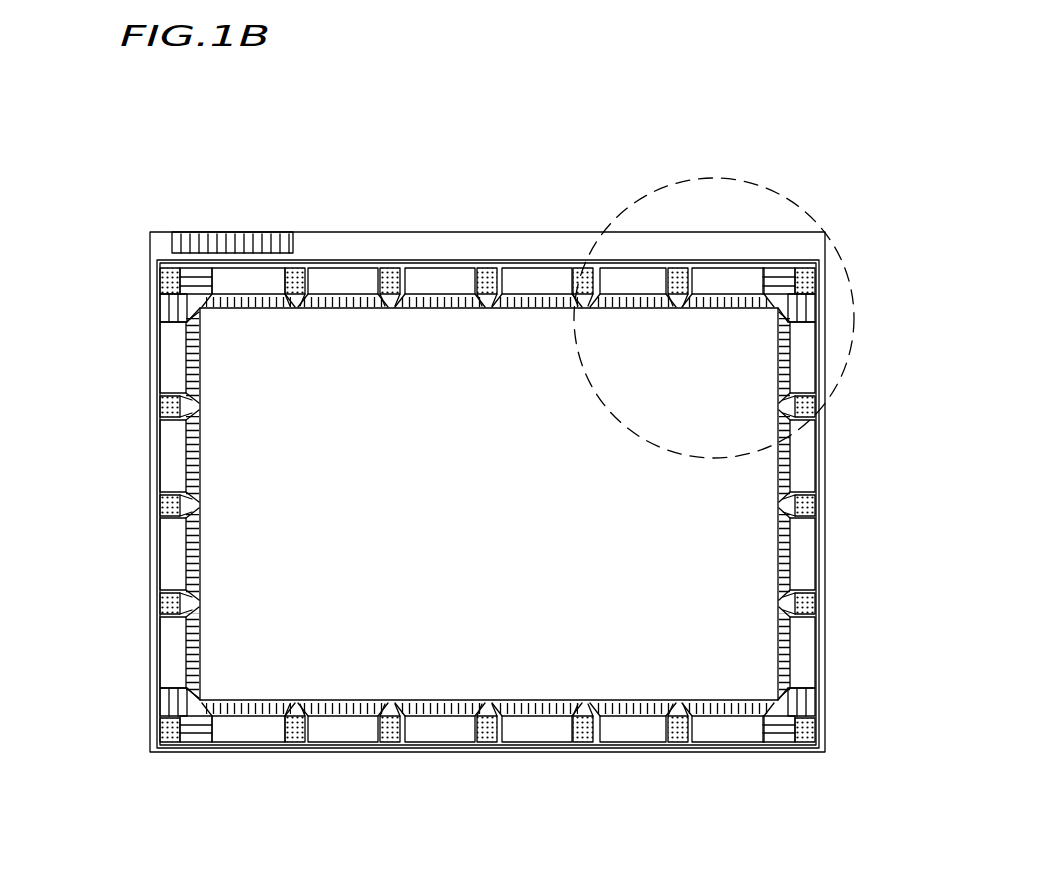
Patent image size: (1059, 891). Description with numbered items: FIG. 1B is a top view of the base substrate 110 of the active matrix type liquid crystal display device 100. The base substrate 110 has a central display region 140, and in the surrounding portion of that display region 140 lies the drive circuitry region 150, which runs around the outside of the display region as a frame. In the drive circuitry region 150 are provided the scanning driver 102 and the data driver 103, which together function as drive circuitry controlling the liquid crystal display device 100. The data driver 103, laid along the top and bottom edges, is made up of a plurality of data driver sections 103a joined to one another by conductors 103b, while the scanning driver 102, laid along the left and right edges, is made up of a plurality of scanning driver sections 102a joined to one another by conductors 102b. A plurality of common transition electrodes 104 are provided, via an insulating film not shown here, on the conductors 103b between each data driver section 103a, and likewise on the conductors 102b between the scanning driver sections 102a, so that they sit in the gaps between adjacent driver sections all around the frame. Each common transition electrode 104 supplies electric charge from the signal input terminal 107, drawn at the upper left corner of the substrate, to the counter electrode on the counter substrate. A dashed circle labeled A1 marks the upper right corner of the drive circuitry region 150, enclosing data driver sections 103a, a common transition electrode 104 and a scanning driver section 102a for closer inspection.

The liquid crystal display device 100 is at (796, 95).
The base substrate 110 is at (790, 230).
The signal input terminal 107 is at (233, 242).
The data driver 103 is at (700, 132).
The data driver section 103a is at (270, 280).
The conductor 103b is at (485, 265).
The scanning driver 102 is at (82, 368).
The scanning driver section 102a is at (170, 375).
The conductor 102b is at (176, 492).
The common transition electrode 104 is at (160, 275).
The display region 140 is at (489, 504).
The drive circuitry region 150 is at (195, 712).
The enlarged region A1 is at (714, 302).